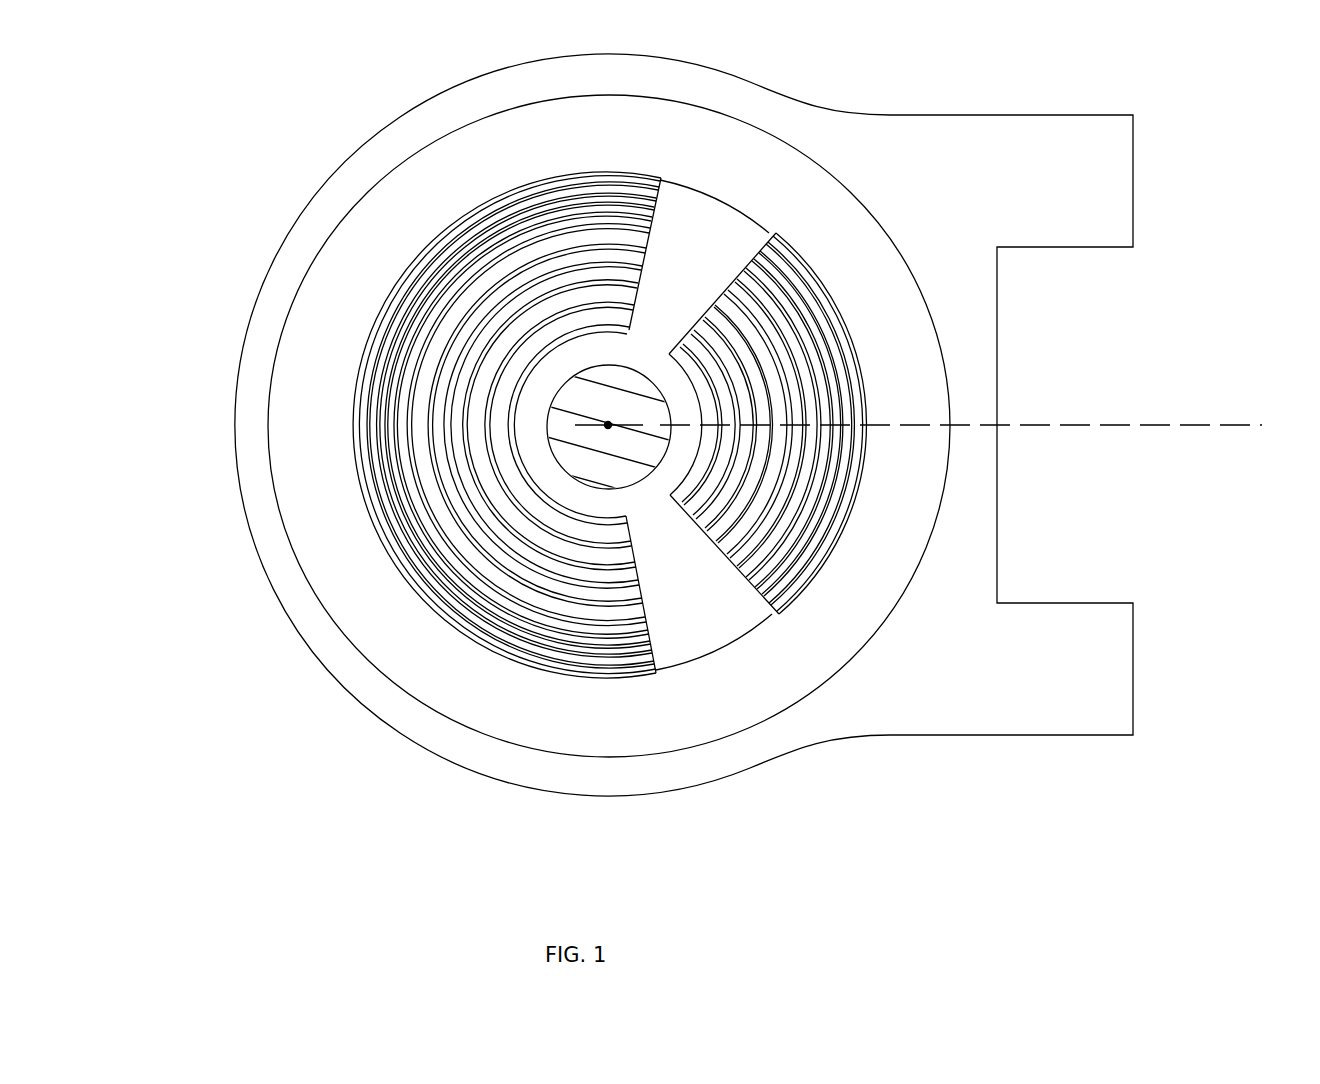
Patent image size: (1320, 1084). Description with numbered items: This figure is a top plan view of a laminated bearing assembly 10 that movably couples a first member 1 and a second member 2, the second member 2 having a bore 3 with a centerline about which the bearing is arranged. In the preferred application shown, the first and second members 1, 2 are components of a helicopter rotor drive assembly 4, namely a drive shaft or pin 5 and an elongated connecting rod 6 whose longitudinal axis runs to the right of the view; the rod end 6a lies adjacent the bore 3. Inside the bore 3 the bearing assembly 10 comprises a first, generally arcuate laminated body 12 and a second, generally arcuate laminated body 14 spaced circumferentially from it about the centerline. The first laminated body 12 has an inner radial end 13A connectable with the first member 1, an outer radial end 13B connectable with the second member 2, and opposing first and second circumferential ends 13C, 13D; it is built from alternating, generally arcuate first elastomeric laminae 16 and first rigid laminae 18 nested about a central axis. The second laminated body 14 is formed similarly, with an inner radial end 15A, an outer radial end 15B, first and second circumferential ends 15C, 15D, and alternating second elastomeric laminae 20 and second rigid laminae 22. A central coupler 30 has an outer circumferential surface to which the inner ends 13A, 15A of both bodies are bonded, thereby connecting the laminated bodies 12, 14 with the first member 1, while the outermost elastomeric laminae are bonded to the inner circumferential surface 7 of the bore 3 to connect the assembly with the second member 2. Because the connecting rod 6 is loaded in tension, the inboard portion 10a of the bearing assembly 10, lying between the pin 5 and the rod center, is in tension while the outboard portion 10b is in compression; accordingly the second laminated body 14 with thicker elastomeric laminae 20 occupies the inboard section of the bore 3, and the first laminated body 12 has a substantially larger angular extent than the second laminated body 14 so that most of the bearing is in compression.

The first member 1 is at (640, 497).
The second member 2 is at (300, 214).
The bore 3 is at (708, 650).
The helicopter rotor drive assembly 4 is at (256, 800).
The drive shaft or pin 5 is at (627, 375).
The connecting rod 6 is at (1049, 728).
The rod end 6a is at (248, 466).
The inner circumferential surface 7 is at (706, 197).
The laminated bearing assembly 10 is at (716, 142).
The inboard portion 10a is at (886, 254).
The outboard portion 10b is at (344, 511).
The first laminated body 12 is at (501, 180).
The inner radial end 13A is at (523, 463).
The outer radial end 13B is at (380, 532).
The first circumferential end 13C is at (650, 640).
The second circumferential end 13D is at (655, 203).
The second laminated body 14 is at (880, 348).
The inner radial end 15A is at (700, 444).
The outer radial end 15B is at (860, 473).
The first circumferential end 15C is at (748, 590).
The second circumferential end 15D is at (748, 255).
The first elastomeric laminae 16 is at (570, 273).
The first rigid laminae 18 is at (547, 273).
The second elastomeric laminae 20 is at (793, 287).
The second rigid laminae 22 is at (782, 264).
The central coupler 30 is at (667, 336).